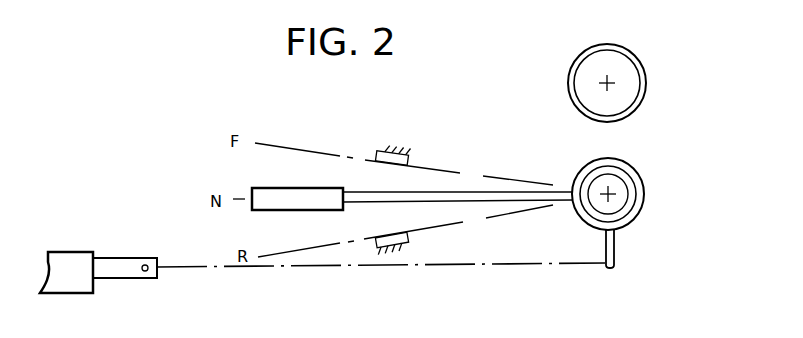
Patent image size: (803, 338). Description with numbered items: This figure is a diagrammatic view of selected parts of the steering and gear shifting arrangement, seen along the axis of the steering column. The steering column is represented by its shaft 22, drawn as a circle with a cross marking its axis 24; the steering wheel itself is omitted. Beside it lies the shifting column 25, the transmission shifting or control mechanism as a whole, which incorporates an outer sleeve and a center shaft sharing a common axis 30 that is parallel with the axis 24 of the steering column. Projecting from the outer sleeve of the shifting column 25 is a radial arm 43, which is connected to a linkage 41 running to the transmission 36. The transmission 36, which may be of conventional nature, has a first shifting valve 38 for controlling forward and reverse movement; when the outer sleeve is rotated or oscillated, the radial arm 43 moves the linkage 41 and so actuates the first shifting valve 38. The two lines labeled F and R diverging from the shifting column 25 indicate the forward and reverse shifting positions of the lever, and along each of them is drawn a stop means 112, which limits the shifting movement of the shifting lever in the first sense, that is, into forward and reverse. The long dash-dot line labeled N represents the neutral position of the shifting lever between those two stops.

The shaft 22 is at (645, 88).
The axis 24 is at (612, 78).
The shifting column 25 is at (646, 205).
The common axis 30 is at (613, 192).
The transmission 36 is at (75, 283).
The first shifting valve 38 is at (138, 273).
The linkage 41 is at (337, 267).
The radial arm 43 is at (612, 248).
The stop means 112 is at (388, 150).